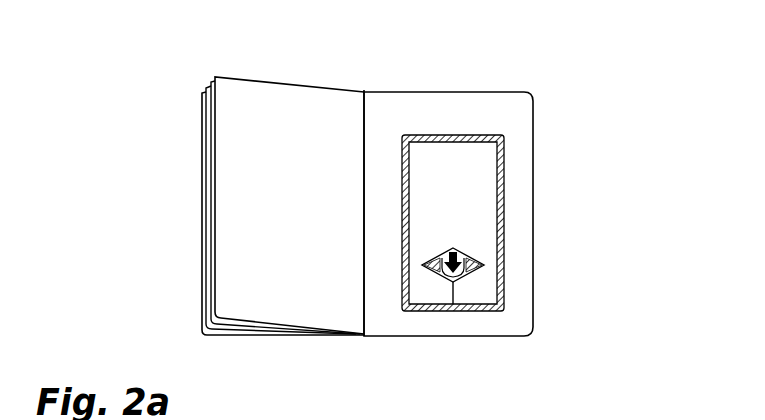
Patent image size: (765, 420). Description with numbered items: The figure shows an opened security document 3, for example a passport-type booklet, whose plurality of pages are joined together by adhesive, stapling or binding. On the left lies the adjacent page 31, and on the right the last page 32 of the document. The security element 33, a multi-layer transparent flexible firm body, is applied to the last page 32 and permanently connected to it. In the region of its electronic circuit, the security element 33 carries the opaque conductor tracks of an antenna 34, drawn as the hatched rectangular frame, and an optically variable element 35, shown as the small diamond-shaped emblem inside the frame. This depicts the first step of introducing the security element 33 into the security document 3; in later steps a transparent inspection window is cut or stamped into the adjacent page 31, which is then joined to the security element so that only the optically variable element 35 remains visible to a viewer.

The security document 3 is at (165, 224).
The page 31 is at (261, 79).
The page 32 is at (472, 91).
The security element 33 is at (521, 151).
The antenna 34 is at (504, 217).
The optically variable element 35 is at (478, 273).